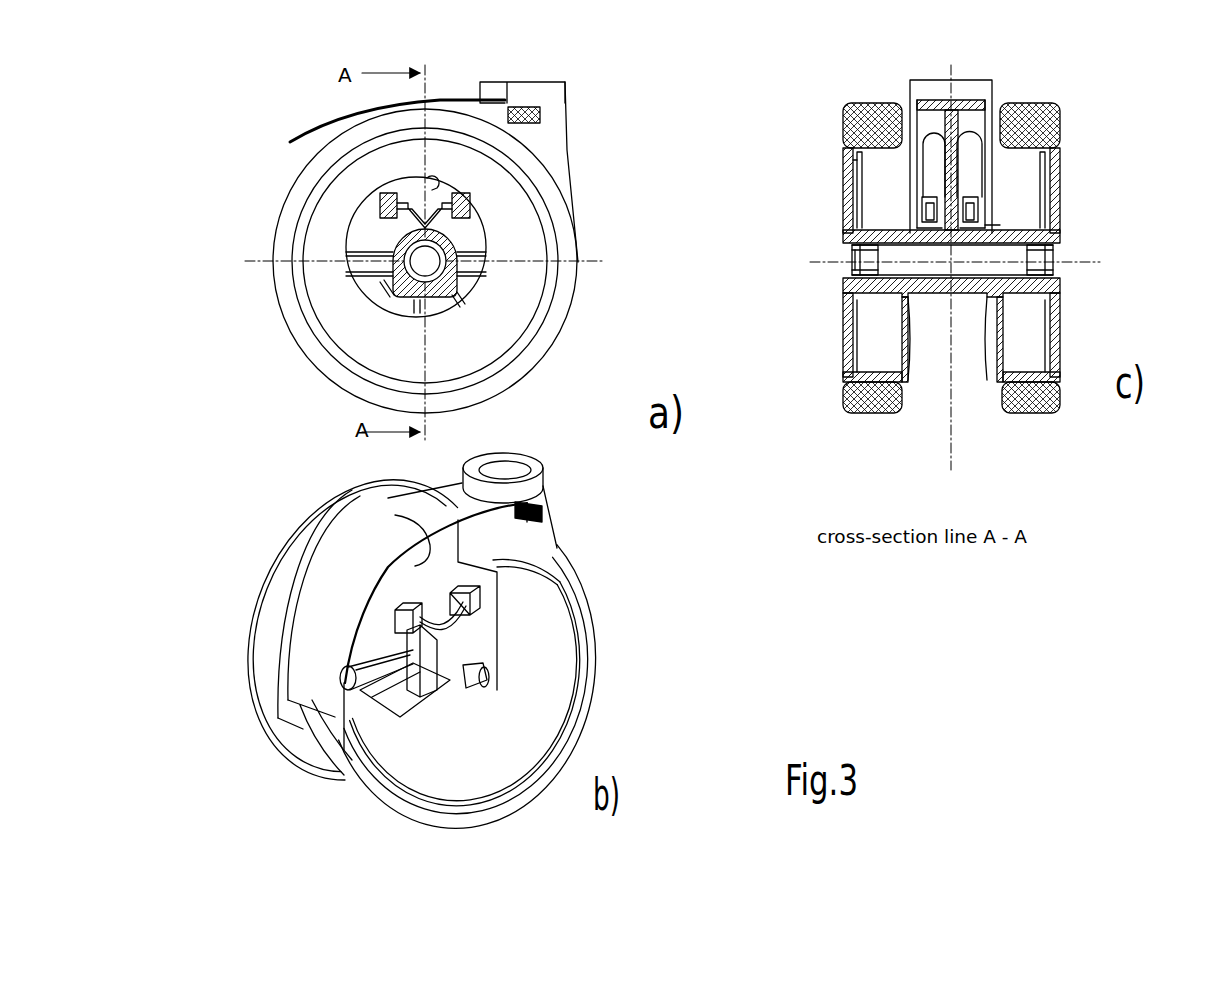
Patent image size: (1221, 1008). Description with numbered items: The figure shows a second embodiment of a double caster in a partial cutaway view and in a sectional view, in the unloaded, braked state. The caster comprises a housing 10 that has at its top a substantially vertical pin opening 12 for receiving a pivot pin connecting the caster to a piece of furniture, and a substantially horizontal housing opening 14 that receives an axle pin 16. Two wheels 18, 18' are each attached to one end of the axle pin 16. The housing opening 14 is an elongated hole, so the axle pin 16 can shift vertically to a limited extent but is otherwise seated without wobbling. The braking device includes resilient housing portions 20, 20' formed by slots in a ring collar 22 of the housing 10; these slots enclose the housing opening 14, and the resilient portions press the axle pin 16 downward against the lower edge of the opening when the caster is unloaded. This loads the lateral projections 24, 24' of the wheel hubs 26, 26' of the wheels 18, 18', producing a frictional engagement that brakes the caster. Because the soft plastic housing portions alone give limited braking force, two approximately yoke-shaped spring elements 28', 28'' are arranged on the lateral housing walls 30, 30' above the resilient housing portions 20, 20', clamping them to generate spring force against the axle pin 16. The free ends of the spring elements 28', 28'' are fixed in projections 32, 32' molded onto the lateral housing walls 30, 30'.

The housing 10 is at (560, 130).
The pin opening 12 is at (505, 470).
The housing opening 14 is at (410, 282).
The axle pin 16 is at (438, 283).
The wheel 18 is at (727, 465).
The wheel 18' is at (530, 441).
The resilient housing portion 20 is at (667, 452).
The resilient housing portion 20' is at (798, 253).
The ring collar 22 is at (445, 258).
The lateral projection 24 is at (1000, 392).
The lateral projection 24' is at (917, 392).
The wheel hub 26 is at (1109, 284).
The wheel hub 26' is at (806, 274).
The spring element 28' is at (675, 393).
The spring element 28'' is at (837, 217).
The lateral housing wall 30 is at (690, 322).
The lateral housing wall 30' is at (826, 143).
The projection 32 is at (825, 386).
The projection 32' is at (539, 389).